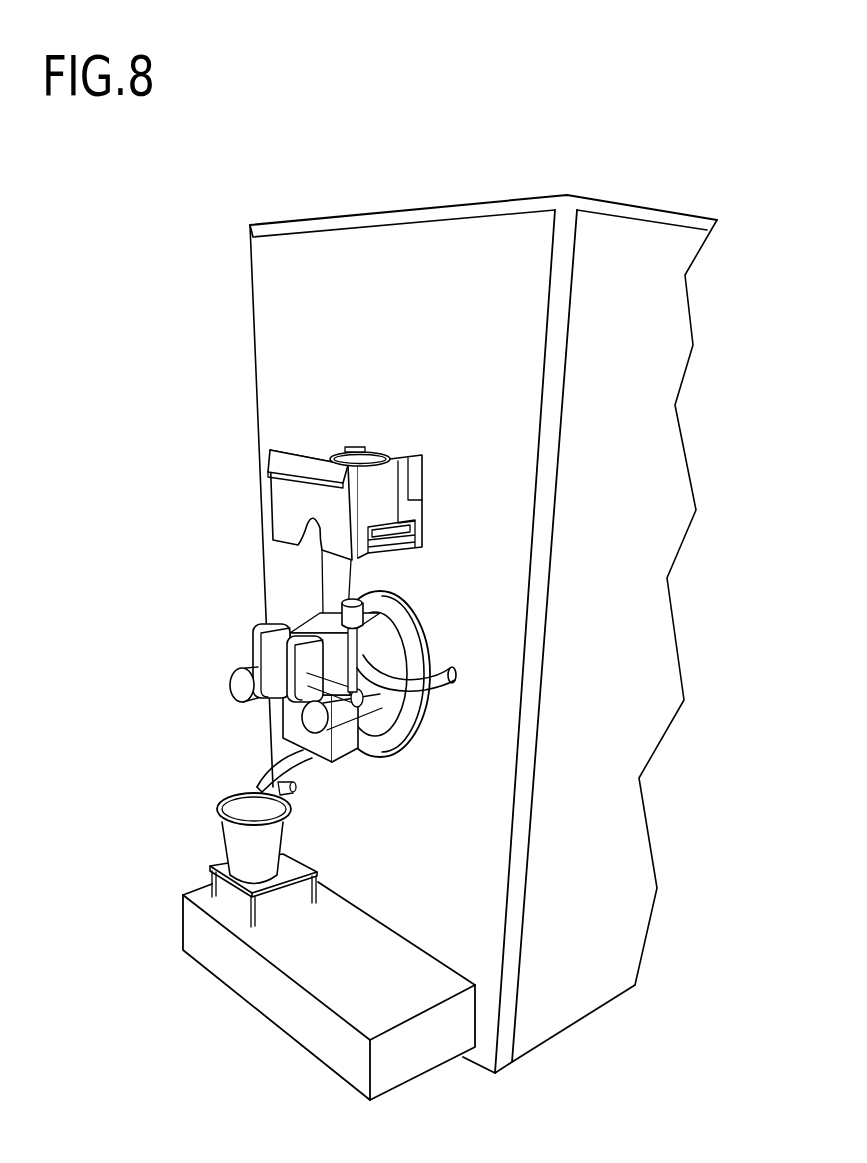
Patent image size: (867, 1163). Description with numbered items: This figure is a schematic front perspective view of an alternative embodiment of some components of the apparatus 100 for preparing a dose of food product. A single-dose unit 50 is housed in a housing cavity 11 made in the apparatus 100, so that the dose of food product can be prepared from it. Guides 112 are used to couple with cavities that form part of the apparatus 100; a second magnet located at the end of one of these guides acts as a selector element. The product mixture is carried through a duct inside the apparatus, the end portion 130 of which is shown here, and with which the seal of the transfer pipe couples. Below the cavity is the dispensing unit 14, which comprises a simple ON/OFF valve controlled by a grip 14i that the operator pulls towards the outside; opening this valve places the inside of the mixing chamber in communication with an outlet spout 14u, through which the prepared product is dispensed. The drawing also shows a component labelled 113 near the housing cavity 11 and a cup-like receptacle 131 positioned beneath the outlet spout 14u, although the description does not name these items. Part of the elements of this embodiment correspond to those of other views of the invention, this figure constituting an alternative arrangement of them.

The apparatus 100 is at (605, 163).
The single-dose unit 50 is at (360, 447).
The housing cavity 11 is at (324, 450).
The liquid outlet duct 113 is at (418, 537).
The guides 112 is at (382, 543).
The grip 14i is at (460, 665).
The outlet spout 14u is at (268, 743).
The dispensing unit 14 is at (430, 744).
The end portion 130 is at (287, 790).
The cup 131 is at (215, 842).